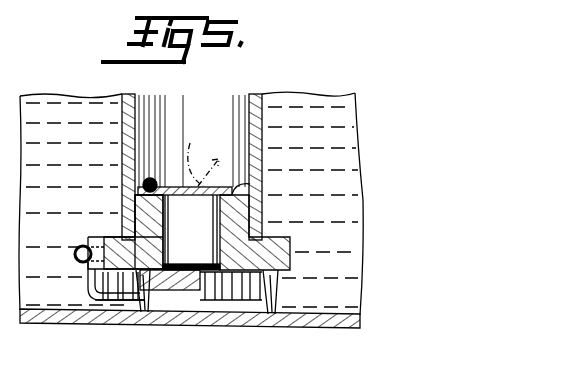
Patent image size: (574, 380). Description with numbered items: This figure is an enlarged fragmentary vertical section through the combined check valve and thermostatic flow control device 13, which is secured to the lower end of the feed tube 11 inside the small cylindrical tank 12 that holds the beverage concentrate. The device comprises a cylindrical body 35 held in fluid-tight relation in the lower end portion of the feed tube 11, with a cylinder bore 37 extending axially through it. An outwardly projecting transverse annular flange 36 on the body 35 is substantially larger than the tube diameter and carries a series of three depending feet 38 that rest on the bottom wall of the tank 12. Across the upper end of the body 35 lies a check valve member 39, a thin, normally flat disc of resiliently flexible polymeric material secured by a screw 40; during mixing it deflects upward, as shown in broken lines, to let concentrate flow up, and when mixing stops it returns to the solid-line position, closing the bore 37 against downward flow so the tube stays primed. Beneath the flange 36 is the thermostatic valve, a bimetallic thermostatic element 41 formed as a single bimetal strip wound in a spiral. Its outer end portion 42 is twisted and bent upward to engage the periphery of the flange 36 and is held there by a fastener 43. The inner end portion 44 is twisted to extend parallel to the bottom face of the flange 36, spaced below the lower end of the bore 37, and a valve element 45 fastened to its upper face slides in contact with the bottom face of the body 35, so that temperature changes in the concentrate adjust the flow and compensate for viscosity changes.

The feed tube 11 is at (256, 94).
The cylindrical tank 12 is at (40, 323).
The combined check valve and thermostatic flow control device 13 is at (108, 235).
The cylindrical body 35 is at (300, 173).
The annular flange 36 is at (292, 248).
The cylinder bore 37 is at (214, 228).
The depending feet 38 is at (145, 302).
The check valve member 39 is at (198, 154).
The screw 40 is at (152, 180).
The bimetallic thermostatic element 41 is at (226, 300).
The end portion 42 is at (87, 270).
The fastener 43 is at (82, 246).
The inner end portion 44 is at (176, 292).
The valve element 45 is at (186, 266).